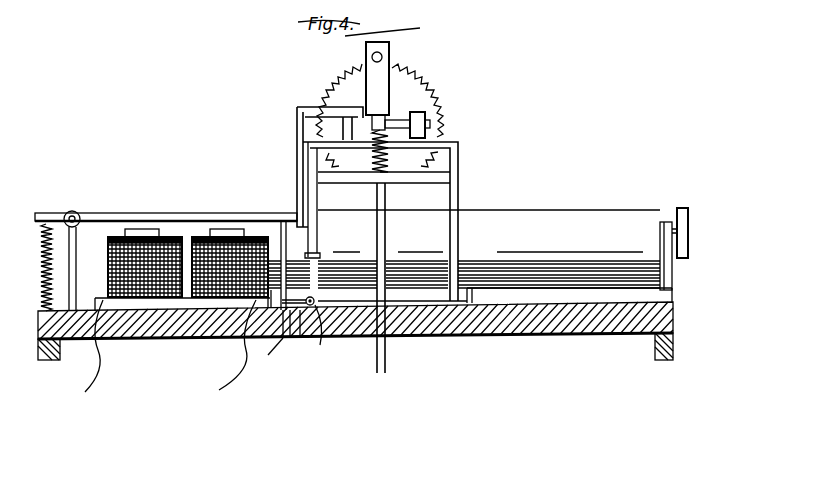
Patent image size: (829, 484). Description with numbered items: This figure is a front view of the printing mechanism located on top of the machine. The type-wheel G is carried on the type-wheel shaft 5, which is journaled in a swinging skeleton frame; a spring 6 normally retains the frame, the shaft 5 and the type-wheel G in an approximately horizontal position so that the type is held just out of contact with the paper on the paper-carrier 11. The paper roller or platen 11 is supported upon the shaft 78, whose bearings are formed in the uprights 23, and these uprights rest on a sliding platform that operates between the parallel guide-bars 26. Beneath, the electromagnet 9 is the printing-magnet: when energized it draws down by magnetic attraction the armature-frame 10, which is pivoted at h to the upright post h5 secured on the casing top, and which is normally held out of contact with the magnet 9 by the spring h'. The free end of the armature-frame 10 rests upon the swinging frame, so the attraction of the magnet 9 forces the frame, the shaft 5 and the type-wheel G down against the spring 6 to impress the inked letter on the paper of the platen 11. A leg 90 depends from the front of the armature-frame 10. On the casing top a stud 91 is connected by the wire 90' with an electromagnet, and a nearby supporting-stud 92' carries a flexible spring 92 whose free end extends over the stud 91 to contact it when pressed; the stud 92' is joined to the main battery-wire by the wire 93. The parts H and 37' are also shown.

The type-wheel G is at (428, 78).
The shaft H is at (413, 112).
The electromagnet 9 is at (424, 125).
The spring 6 is at (369, 151).
The type-wheel shaft 5 is at (453, 197).
The paper-carrier 11 is at (556, 214).
The shaft 78 is at (662, 222).
The uprights 23 is at (673, 277).
The parallel guide-bars 26 is at (655, 295).
The armature-frame 10 is at (207, 213).
The leg 90 is at (305, 200).
The pivot h is at (80, 207).
The spring h' is at (32, 267).
The upright post h5 is at (77, 252).
The wire 37' is at (102, 346).
The wire 90' is at (266, 356).
The stud 91 is at (290, 338).
The flexible spring 92 is at (304, 358).
The wire 93 is at (320, 345).
The supporting-stud 92' is at (315, 300).